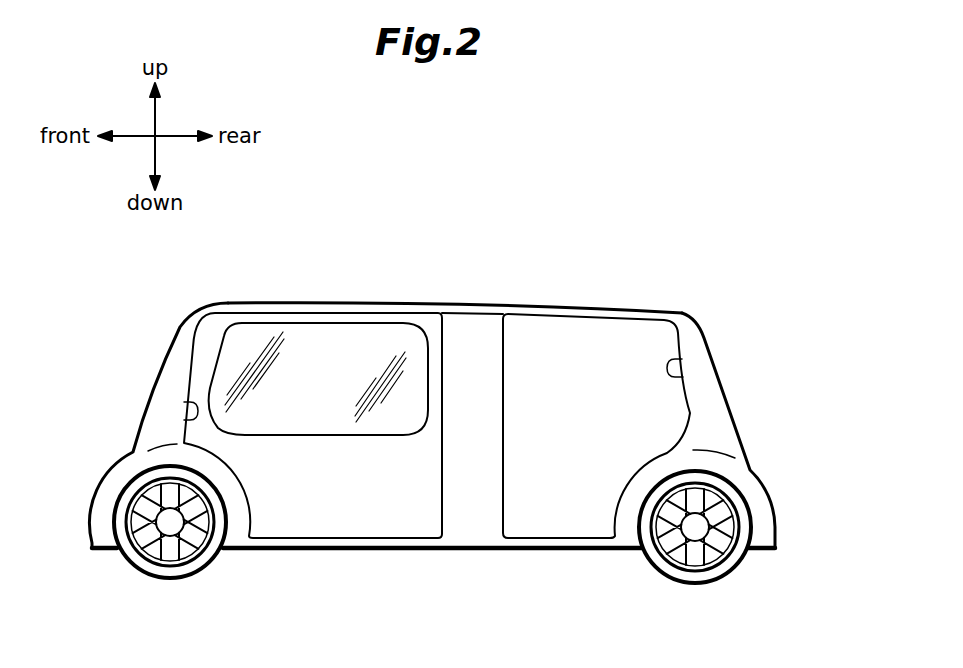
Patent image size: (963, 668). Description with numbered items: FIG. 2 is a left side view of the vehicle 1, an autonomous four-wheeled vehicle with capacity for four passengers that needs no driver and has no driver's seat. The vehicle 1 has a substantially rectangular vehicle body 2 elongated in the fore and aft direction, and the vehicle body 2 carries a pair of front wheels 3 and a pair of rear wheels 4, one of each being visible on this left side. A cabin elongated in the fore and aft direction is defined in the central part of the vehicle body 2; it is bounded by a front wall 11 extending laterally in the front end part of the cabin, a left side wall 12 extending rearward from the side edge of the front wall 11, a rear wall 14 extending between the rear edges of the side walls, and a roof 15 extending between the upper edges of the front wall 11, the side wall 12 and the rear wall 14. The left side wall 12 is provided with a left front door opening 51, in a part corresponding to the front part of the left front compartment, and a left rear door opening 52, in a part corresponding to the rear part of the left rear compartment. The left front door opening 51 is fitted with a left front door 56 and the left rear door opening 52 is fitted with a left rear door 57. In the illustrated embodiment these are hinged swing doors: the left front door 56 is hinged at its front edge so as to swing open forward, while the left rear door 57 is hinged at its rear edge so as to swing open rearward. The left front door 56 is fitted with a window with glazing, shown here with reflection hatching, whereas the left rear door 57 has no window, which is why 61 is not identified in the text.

The vehicle 1 is at (652, 218).
The vehicle body 2 is at (697, 308).
The front wheels 3 is at (188, 577).
The rear wheels 4 is at (710, 582).
The front wall 11 is at (164, 357).
The left side wall 12 is at (468, 510).
The rear wall 14 is at (731, 400).
The roof 15 is at (463, 304).
The left front door opening 51 is at (183, 403).
The left rear door opening 52 is at (687, 357).
The left front door 56 is at (345, 513).
The left rear door 57 is at (557, 515).
The front door window 61 is at (320, 342).